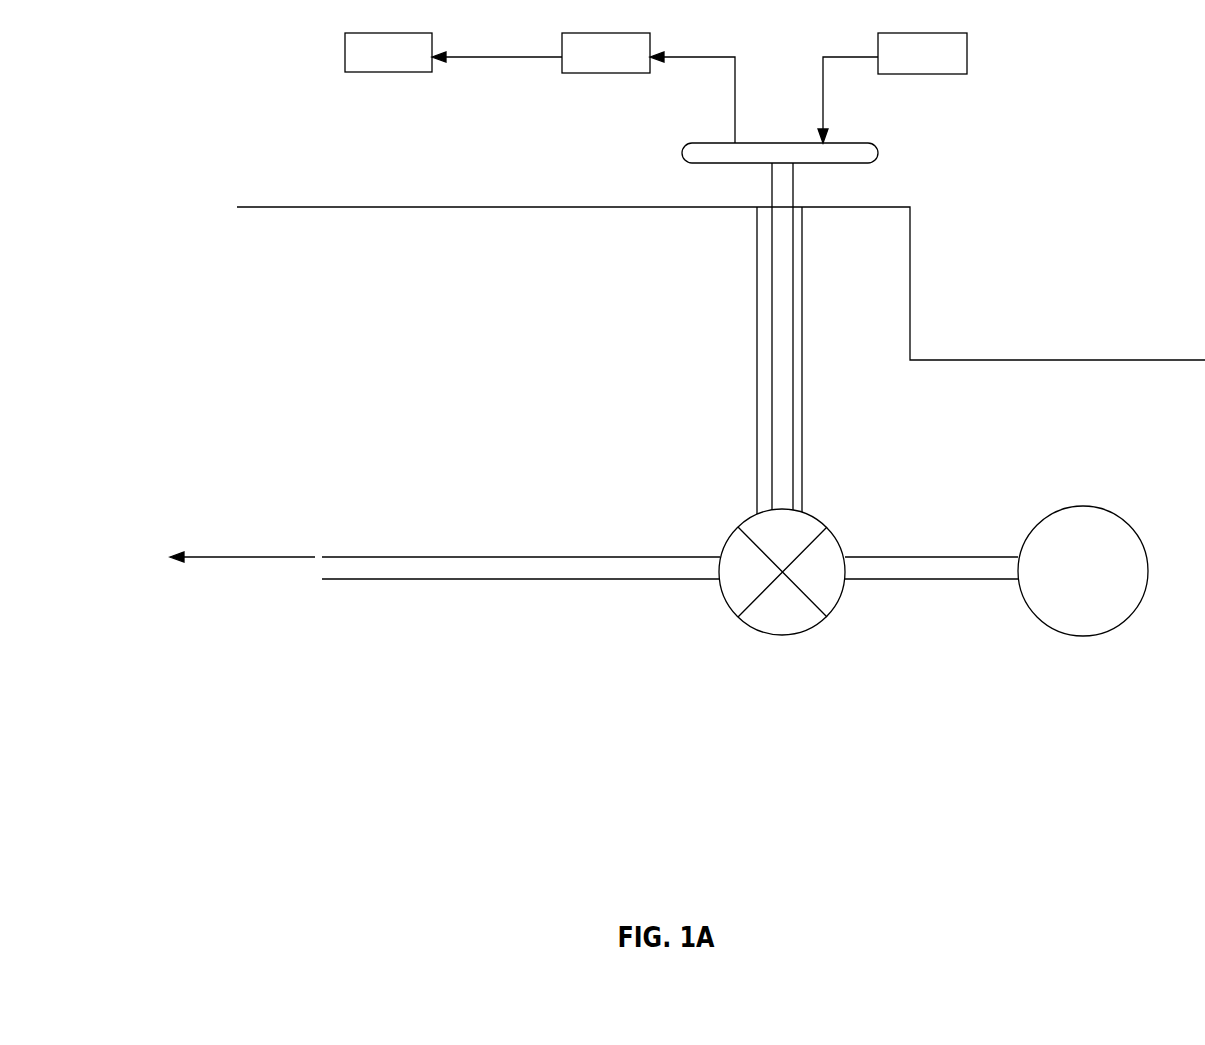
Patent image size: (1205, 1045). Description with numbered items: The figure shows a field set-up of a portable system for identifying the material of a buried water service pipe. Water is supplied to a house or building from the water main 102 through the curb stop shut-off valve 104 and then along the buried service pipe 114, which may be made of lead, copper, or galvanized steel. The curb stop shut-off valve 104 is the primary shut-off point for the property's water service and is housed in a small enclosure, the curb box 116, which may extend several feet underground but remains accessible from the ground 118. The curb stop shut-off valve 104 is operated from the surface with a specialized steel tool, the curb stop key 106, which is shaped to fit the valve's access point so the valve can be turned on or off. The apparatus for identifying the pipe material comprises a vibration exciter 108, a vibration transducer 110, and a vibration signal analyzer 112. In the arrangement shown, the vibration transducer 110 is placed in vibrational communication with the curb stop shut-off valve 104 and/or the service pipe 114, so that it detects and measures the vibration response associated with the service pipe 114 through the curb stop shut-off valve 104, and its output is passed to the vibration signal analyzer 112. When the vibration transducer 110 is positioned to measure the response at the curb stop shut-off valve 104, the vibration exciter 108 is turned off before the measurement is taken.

The water main 102 is at (1108, 628).
The curb stop shut-off valve 104 is at (790, 627).
The curb stop key 106 is at (690, 143).
The vibration exciter 108 is at (967, 55).
The vibration transducer 110 is at (572, 68).
The vibration signal analyzer 112 is at (345, 50).
The service pipe 114 is at (505, 579).
The curb box 116 is at (752, 396).
The ground 118 is at (254, 205).